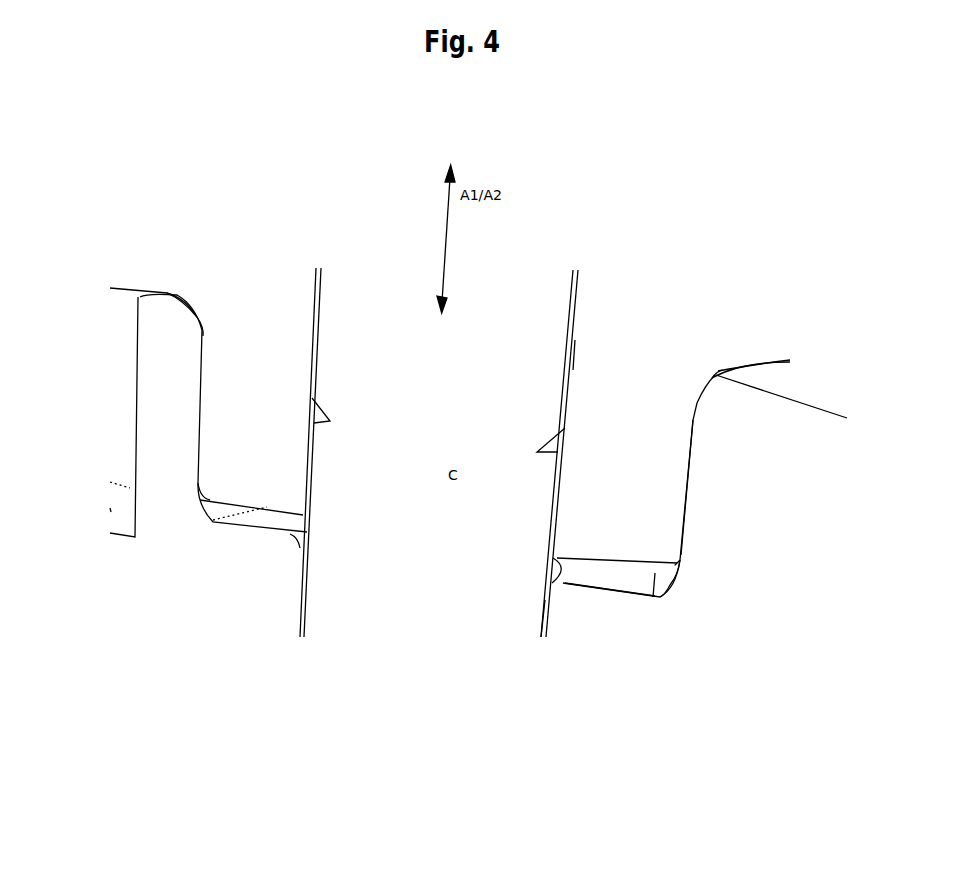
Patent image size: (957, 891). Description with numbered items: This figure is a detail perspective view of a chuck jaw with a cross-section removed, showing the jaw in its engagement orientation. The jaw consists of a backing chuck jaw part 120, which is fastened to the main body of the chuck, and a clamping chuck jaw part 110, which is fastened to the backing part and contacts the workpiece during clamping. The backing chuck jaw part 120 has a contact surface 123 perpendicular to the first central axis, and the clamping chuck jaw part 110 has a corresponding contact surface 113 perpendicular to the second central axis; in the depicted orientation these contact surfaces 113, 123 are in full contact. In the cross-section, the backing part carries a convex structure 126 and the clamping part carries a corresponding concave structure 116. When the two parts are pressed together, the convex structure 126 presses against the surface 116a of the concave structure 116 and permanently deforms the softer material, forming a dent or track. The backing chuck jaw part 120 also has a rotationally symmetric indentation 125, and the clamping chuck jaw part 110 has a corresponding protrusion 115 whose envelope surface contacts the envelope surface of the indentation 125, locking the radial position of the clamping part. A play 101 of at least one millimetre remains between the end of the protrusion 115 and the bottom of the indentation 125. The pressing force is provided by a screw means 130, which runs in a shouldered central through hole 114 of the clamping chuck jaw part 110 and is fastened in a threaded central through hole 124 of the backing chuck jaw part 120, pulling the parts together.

The play 101 is at (603, 575).
The clamping chuck jaw part 110 is at (633, 445).
The contact surface 113 is at (125, 292).
The through hole 114 is at (572, 357).
The protrusion 115 is at (657, 512).
The concave structure 116 is at (718, 370).
The surface of concave structure 116a is at (713, 378).
The backing chuck jaw part 120 is at (754, 398).
The contact surface 123 is at (175, 295).
The central through hole 124 is at (548, 615).
The indentation 125 is at (680, 578).
The convex structure 126 is at (794, 404).
The screw means 130 is at (546, 453).